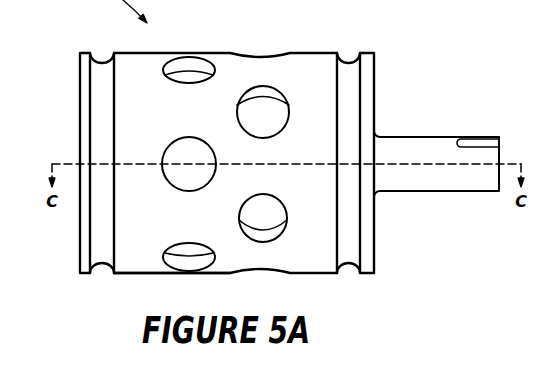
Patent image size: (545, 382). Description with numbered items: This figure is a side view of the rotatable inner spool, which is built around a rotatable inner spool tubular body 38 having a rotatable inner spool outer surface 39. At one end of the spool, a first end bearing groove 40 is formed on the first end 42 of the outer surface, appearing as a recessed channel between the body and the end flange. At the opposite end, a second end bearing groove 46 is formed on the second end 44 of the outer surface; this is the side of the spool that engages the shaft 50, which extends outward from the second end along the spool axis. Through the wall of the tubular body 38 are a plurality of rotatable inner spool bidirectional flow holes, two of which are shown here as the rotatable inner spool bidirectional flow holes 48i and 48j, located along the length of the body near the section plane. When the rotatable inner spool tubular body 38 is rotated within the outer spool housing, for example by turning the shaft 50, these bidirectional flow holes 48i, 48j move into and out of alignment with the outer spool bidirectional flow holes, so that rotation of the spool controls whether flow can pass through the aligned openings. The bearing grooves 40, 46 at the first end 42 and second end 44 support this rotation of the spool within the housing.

The rotatable inner spool tubular body 38 is at (228, 70).
The rotatable inner spool outer surface 39 is at (140, 278).
The first end bearing groove 40 is at (102, 58).
The first end 42 is at (79, 62).
The second end 44 is at (375, 62).
The second end bearing groove 46 is at (346, 62).
The rotatable inner spool bidirectional flow hole 48i is at (283, 200).
The rotatable inner spool bidirectional flow hole 48j is at (177, 139).
The shaft 50 is at (490, 121).